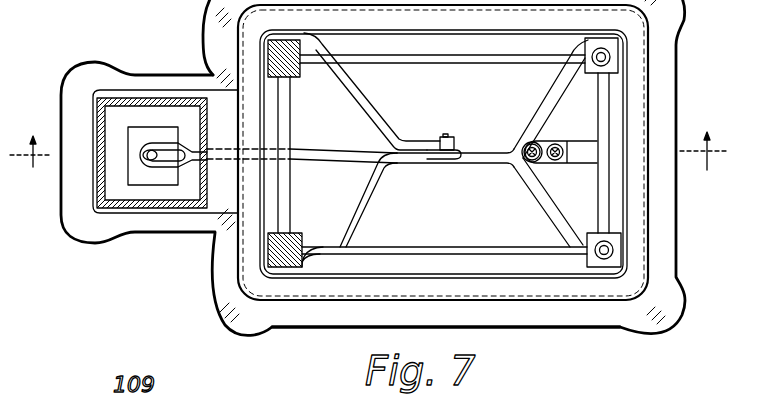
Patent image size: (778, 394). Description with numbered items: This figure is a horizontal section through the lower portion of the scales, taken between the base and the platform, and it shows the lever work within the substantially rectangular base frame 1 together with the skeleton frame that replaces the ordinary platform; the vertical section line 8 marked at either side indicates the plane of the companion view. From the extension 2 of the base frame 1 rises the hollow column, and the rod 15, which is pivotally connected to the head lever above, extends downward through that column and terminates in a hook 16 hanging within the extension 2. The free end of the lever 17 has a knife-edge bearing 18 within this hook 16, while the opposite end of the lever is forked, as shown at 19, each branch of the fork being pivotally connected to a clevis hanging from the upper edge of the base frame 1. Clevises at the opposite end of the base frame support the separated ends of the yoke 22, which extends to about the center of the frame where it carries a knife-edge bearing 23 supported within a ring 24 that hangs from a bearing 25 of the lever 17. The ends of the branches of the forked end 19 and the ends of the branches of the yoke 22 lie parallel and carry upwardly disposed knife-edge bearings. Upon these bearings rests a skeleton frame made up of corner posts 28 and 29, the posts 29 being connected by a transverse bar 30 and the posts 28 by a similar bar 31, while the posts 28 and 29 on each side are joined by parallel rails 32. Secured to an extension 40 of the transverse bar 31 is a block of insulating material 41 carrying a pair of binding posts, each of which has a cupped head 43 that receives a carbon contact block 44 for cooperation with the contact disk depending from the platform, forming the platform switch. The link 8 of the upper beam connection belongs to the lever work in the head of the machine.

The base frame 1 is at (497, 311).
The extension 2 is at (200, 232).
The link 8 is at (370, 151).
The rod 15 is at (157, 143).
The hook 16 is at (145, 143).
The lever 17 is at (487, 163).
The knife-edge bearing 18 is at (147, 164).
The forked end 19 is at (556, 78).
The yoke 22 is at (370, 97).
The knife-edge bearing 23 is at (448, 132).
The ring 24 is at (432, 163).
The bearing 25 is at (462, 155).
The corner posts 28 is at (613, 60).
The corner posts 29 is at (300, 70).
The transverse bar 30 is at (290, 195).
The transverse bar 31 is at (603, 107).
The rails 32 is at (463, 57).
The extension 40 is at (582, 163).
The block of insulating material 41 is at (558, 146).
The cupped head 43 is at (533, 160).
The carbon contact block 44 is at (535, 143).